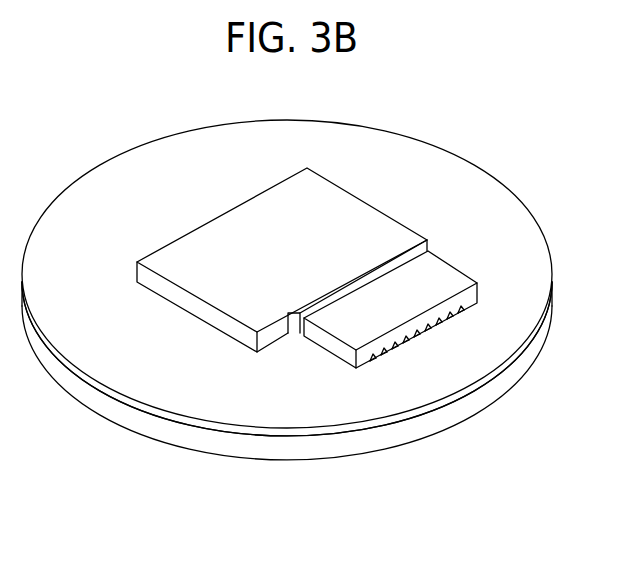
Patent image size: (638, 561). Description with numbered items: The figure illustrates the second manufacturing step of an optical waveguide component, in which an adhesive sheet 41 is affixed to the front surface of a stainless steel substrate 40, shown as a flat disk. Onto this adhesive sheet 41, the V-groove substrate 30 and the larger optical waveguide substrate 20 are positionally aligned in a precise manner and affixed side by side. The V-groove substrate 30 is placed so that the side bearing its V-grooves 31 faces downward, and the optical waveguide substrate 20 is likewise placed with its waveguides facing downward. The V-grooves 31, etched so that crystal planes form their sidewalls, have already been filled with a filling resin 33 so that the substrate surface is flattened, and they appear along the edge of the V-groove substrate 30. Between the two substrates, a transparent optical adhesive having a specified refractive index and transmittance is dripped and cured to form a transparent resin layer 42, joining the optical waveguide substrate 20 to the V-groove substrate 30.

The optical waveguide substrate 20 is at (313, 198).
The V-groove substrate 30 is at (437, 258).
The V-grooves 31 is at (473, 379).
The filling resin 33 is at (460, 305).
The stainless steel substrate 40 is at (124, 416).
The adhesive sheet 41 is at (214, 403).
The transparent resin layer 42 is at (415, 283).